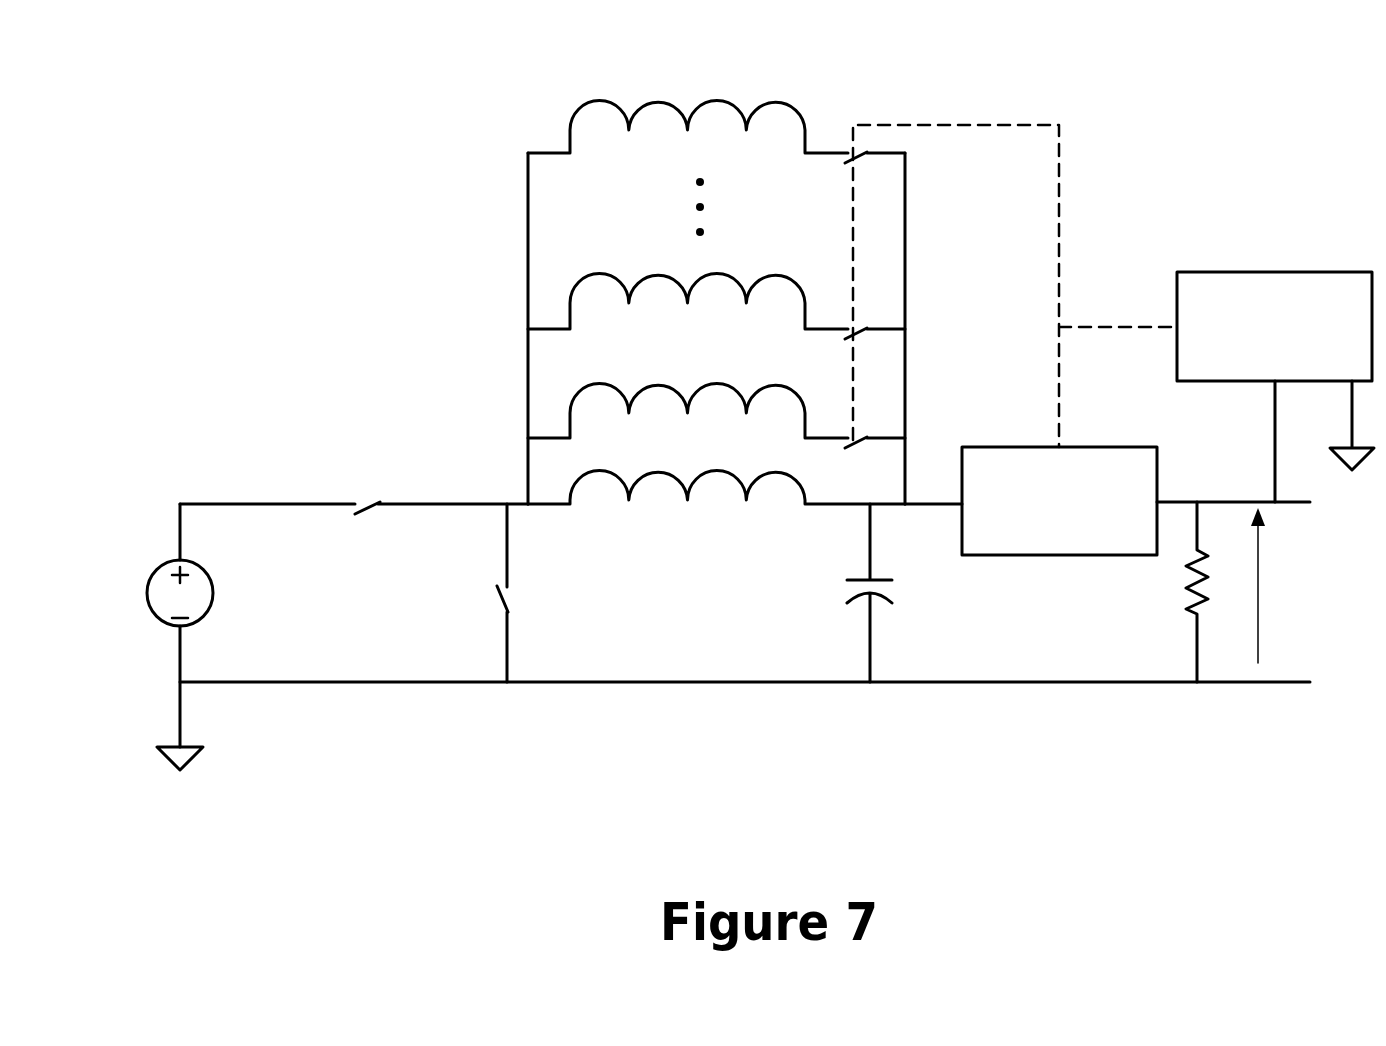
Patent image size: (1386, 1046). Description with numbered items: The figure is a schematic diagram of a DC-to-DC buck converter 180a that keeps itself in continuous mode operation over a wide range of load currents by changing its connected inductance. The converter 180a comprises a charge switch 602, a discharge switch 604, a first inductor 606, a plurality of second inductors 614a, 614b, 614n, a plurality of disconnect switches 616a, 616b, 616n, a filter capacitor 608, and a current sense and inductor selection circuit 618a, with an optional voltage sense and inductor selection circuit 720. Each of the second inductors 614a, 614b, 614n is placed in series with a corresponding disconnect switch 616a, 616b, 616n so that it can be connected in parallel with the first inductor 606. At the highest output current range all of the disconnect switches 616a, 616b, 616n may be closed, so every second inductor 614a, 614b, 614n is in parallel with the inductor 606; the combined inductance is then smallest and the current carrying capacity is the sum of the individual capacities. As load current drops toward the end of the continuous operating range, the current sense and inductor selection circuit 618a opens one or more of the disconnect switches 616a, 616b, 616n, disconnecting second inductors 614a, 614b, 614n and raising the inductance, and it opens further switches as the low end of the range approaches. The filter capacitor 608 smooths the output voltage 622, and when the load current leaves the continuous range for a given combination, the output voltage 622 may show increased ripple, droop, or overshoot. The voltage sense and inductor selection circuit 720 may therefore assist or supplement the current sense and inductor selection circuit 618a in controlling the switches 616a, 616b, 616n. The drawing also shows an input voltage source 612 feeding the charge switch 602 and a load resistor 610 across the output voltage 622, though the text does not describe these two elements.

The DC-to-DC buck converter 180a is at (838, 792).
The charge switch 602 is at (370, 512).
The discharge switch 604 is at (497, 603).
The first inductor 606 is at (628, 513).
The filter capacitor 608 is at (843, 597).
The load resistor 610 is at (1187, 590).
The input voltage source 612 is at (157, 623).
The second inductor 614a is at (600, 385).
The second inductor 614b is at (597, 277).
The second inductor 614n is at (612, 100).
The disconnect switch 616a is at (852, 433).
The disconnect switch 616b is at (850, 322).
The disconnect switch 616n is at (849, 148).
The current sense and inductor selection circuit 618a is at (1101, 447).
The voltage sense and inductor selection circuit 720 is at (1232, 272).
The output voltage 622 is at (1352, 596).